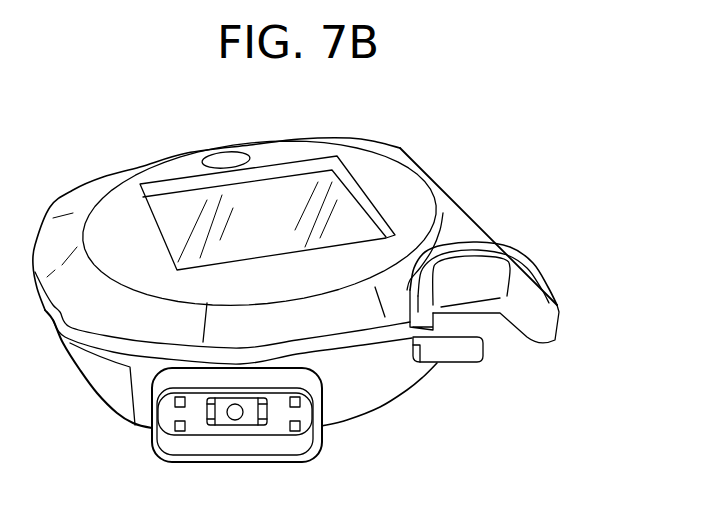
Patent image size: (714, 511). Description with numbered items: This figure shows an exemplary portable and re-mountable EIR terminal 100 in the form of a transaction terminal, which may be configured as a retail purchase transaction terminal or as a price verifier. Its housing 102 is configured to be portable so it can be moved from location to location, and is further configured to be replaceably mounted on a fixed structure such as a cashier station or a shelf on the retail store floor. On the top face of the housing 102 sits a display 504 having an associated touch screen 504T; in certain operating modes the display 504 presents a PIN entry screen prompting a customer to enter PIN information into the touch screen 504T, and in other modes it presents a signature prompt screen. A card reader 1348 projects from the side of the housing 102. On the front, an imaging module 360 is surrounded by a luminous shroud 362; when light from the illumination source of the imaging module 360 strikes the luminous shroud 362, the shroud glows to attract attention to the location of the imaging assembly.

The EIR terminal 100 is at (512, 210).
The housing 102 is at (363, 398).
The display 504 is at (289, 183).
The touch screen 504T is at (338, 192).
The card reader 1348 is at (508, 350).
The luminous shroud 362 is at (185, 447).
The imaging module 360 is at (257, 442).